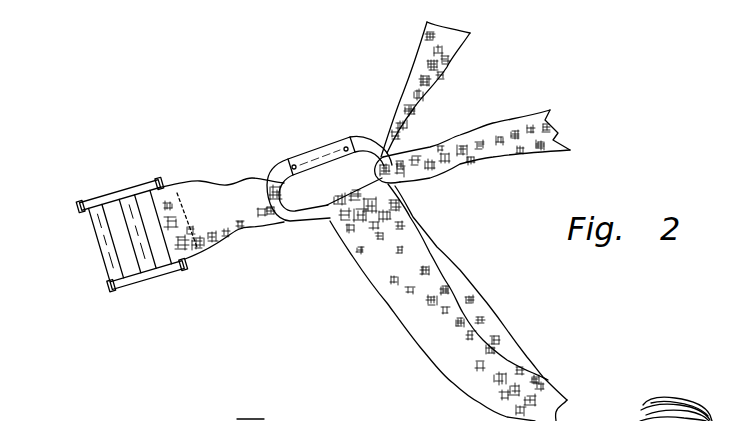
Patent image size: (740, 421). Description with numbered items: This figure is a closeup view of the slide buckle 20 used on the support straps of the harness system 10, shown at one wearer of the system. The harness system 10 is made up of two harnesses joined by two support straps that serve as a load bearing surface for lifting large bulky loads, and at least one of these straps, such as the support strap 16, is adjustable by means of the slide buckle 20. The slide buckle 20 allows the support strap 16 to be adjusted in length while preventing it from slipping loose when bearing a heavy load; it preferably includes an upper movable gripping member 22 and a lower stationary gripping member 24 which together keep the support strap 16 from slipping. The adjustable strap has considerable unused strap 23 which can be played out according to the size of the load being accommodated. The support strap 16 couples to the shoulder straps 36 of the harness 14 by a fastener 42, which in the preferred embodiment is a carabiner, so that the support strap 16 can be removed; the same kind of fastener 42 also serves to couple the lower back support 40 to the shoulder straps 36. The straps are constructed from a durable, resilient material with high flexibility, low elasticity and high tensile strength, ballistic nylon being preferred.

The harness system 10 is at (384, 420).
The harness 14 is at (328, 313).
The support strap 16 is at (240, 237).
The slide buckle 20 is at (85, 205).
The upper movable gripping member 22 is at (124, 204).
The unused strap 23 is at (170, 191).
The lower stationary gripping member 24 is at (110, 253).
The shoulder straps 36 is at (517, 120).
The lower back support 40 is at (463, 270).
The fastener 42 is at (357, 134).